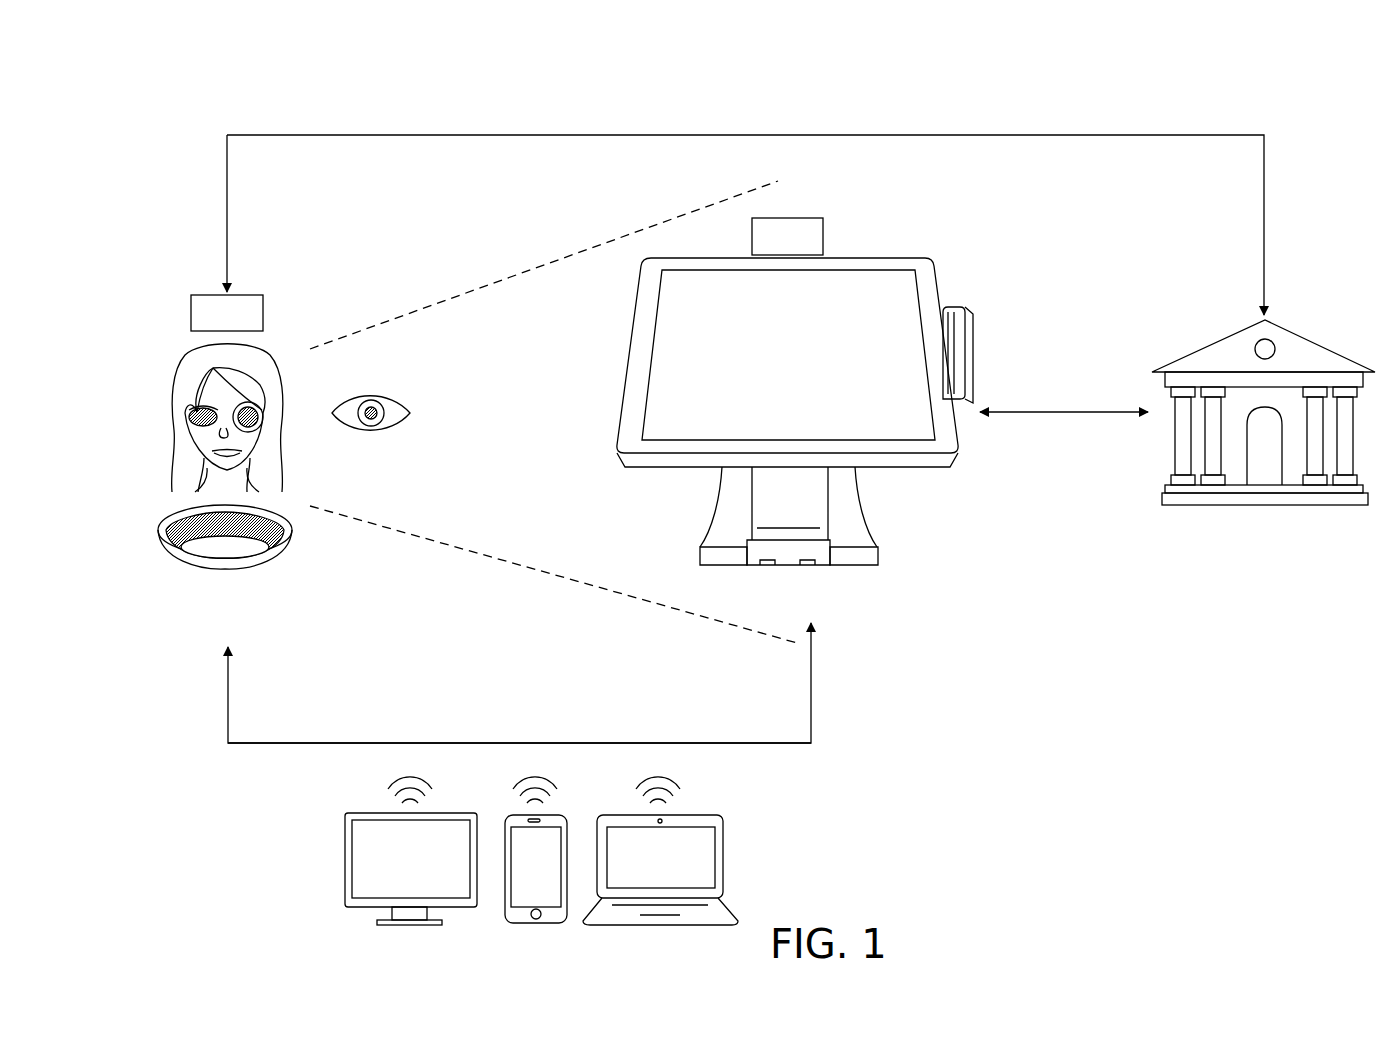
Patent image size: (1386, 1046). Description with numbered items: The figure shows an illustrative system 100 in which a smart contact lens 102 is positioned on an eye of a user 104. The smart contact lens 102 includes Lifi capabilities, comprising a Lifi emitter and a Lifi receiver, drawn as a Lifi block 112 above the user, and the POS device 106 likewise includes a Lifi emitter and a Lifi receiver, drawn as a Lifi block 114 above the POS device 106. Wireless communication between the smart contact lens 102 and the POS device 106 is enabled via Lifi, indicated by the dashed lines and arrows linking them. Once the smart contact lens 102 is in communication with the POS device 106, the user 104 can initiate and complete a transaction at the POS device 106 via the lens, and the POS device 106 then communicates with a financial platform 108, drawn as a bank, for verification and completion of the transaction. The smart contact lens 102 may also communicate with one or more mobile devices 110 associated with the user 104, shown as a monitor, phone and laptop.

The system 100 is at (190, 72).
The smart contact lens 102 is at (263, 412).
The user 104 is at (175, 398).
The POS device 106 is at (626, 372).
The financial platform 108 is at (1303, 340).
The mobile devices 110 is at (332, 870).
The LiFi module of smart contact lens 112 is at (198, 295).
The LiFi module of POS device 114 is at (798, 218).